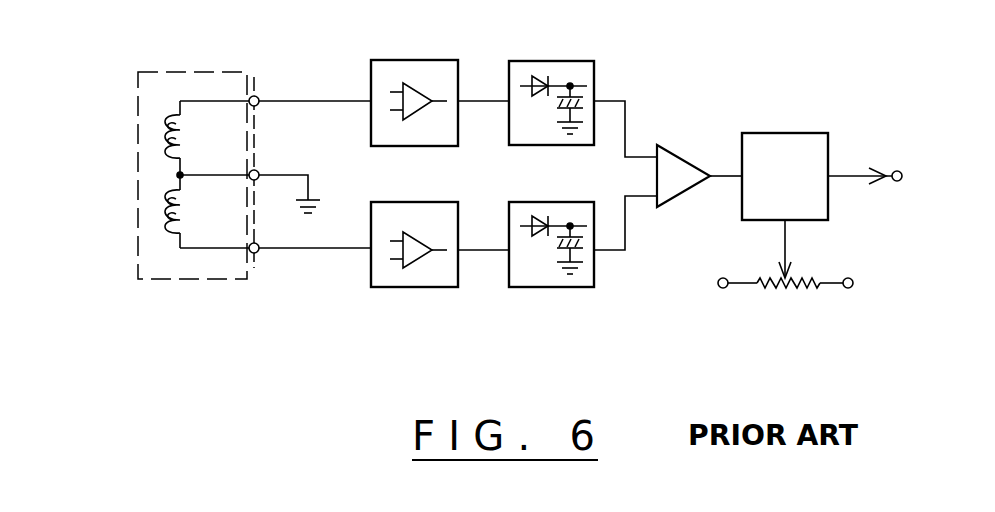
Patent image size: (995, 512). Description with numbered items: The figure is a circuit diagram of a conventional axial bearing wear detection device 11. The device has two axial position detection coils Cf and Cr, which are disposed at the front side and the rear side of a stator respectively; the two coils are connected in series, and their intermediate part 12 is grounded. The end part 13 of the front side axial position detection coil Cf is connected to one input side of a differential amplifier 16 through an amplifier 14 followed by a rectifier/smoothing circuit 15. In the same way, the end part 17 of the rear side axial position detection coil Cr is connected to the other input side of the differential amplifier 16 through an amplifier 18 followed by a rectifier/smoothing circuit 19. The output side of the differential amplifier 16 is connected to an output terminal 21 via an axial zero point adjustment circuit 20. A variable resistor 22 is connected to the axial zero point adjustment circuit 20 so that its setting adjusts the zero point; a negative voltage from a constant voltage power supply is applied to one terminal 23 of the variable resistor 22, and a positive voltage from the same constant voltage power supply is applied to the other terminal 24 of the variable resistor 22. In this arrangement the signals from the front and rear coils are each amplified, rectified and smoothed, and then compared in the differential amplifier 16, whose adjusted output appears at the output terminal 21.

The axial bearing wear detection device 11 is at (196, 153).
The intermediate part 12 is at (258, 171).
The end part 13 is at (258, 97).
The amplifier 14 is at (415, 60).
The rectifier/smoothing circuit 15 is at (552, 60).
The differential amplifier 16 is at (667, 148).
The end part 17 is at (258, 244).
The amplifier 18 is at (417, 287).
The rectifier/smoothing circuit 19 is at (553, 287).
The axial zero point adjustment circuit 20 is at (785, 133).
The output terminal 21 is at (898, 170).
The variable resistor 22 is at (786, 290).
The terminal 23 is at (722, 290).
The terminal 24 is at (848, 290).
The axial position detection coil Cf is at (167, 137).
The axial position detection coil Cr is at (167, 215).